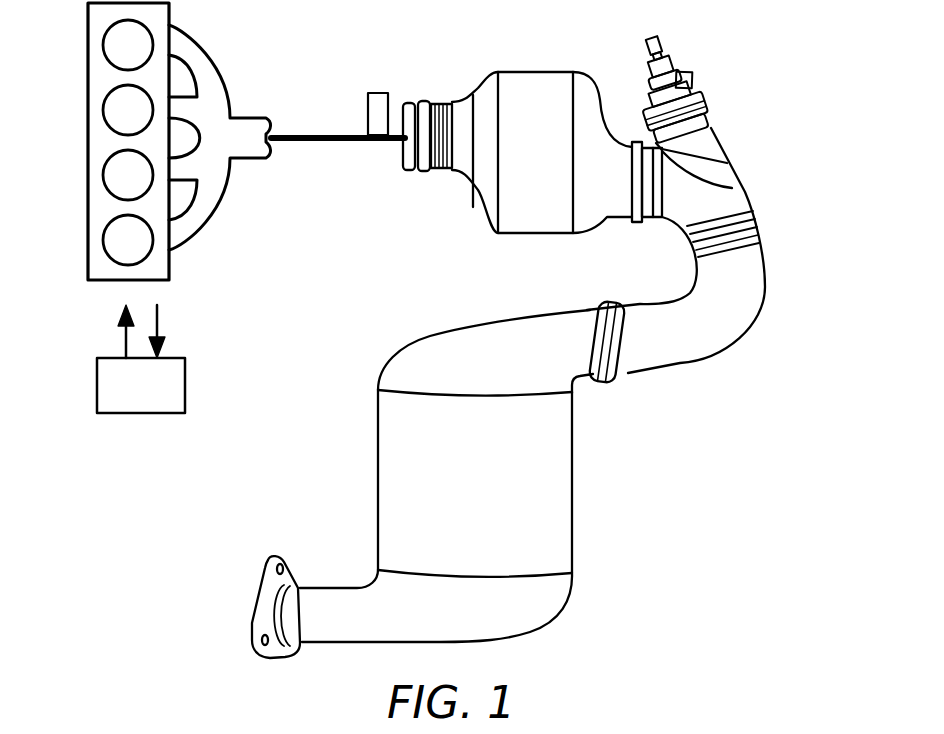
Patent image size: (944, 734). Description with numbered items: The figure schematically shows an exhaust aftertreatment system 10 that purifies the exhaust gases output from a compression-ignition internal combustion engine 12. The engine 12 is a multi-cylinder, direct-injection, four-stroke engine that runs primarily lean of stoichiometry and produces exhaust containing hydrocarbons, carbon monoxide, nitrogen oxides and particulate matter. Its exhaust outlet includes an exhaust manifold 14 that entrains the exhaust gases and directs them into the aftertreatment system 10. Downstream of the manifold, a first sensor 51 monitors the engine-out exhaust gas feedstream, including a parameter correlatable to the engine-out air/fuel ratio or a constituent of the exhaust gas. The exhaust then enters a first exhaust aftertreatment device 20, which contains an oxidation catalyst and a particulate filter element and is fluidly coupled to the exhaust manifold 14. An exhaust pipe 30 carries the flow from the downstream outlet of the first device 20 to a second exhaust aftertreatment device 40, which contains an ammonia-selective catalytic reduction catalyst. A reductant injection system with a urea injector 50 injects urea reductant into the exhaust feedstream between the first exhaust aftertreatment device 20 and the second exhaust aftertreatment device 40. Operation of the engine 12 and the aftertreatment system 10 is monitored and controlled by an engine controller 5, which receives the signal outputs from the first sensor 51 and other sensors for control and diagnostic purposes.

The exhaust aftertreatment system 10 is at (785, 167).
The internal combustion engine 12 is at (128, 240).
The exhaust manifold 14 is at (208, 88).
The engine controller 5 is at (141, 359).
The first sensor 51 is at (378, 92).
The first exhaust aftertreatment device 20 is at (523, 178).
The exhaust pipe 30 is at (718, 312).
The second exhaust aftertreatment device 40 is at (432, 486).
The urea injector 50 is at (677, 108).